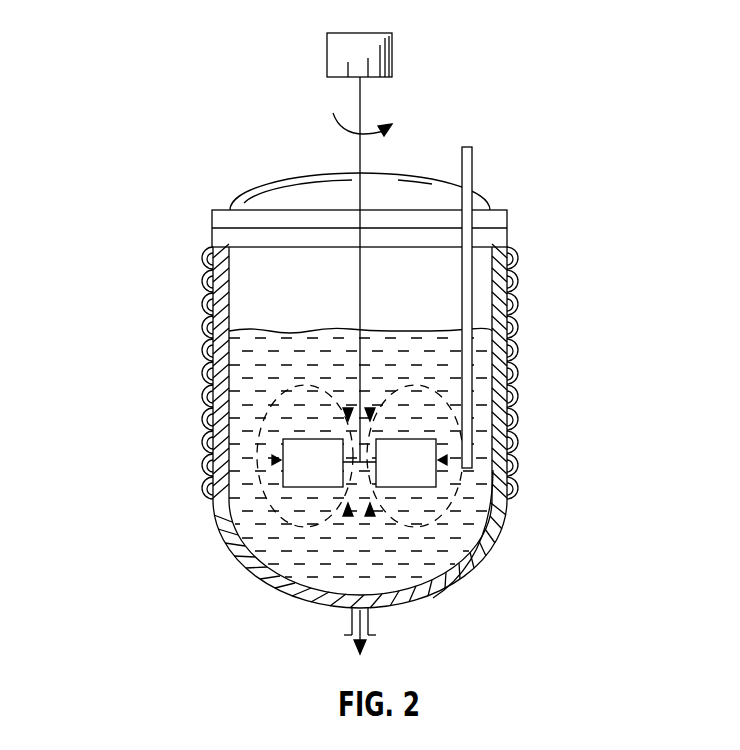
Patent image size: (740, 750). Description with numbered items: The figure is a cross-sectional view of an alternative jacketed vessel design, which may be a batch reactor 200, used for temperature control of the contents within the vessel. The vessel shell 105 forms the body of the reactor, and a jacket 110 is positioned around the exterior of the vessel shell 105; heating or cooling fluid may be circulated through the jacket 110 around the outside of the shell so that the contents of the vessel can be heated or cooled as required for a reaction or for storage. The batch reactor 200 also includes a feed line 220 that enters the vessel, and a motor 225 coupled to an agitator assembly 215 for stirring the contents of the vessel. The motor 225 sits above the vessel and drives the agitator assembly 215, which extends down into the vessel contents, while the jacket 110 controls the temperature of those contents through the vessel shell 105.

The batch reactor 200 is at (146, 27).
The vessel shell 105 is at (440, 594).
The jacket 110 is at (522, 253).
The agitator assembly 215 is at (425, 470).
The feed line 220 is at (473, 158).
The motor 225 is at (327, 57).